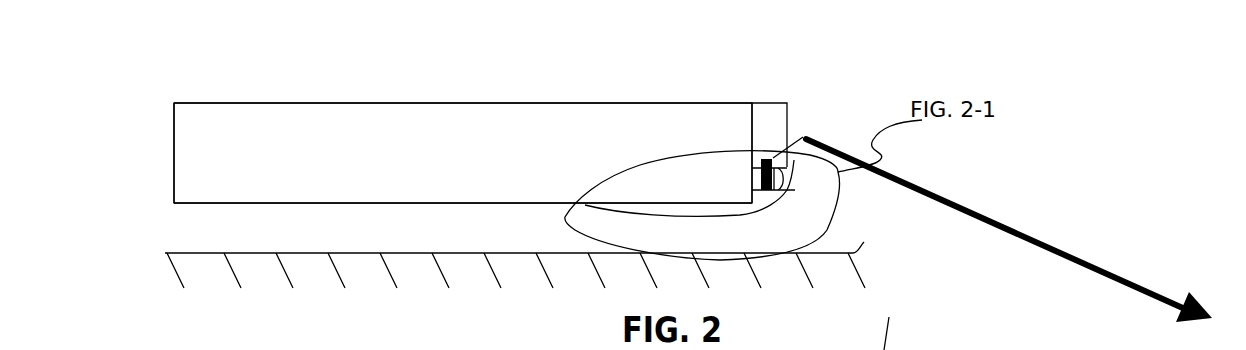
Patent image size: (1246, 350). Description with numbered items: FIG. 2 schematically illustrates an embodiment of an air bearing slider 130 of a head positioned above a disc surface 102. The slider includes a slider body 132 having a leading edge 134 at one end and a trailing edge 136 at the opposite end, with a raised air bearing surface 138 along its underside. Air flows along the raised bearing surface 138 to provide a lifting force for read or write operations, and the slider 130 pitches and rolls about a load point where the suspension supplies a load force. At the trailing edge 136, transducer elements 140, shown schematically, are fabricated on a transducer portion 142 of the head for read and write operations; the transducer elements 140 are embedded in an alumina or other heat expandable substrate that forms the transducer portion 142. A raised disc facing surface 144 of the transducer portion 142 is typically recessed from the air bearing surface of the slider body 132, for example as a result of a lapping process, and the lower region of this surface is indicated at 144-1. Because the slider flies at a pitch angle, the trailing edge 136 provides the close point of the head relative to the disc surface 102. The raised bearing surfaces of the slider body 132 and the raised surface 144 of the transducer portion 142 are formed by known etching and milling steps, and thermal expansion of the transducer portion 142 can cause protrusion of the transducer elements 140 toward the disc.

The surface 102 is at (864, 242).
The slider 130 is at (363, 88).
The slider body 132 is at (278, 103).
The leading edge 134 is at (174, 157).
The trailing edge 136 is at (752, 110).
The raised air bearing surface 138 is at (345, 204).
The transducer elements 140 is at (805, 137).
The transducer portion 142 is at (778, 112).
The raised disc facing surface 144 is at (783, 204).
The contact portion 144-1 is at (738, 215).